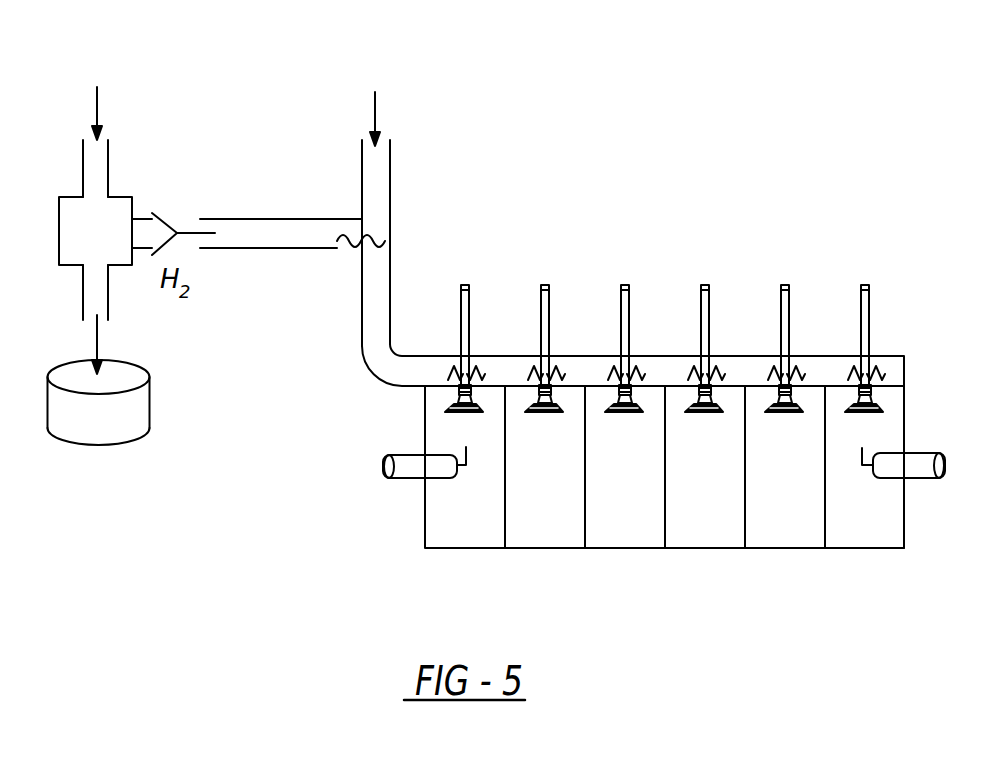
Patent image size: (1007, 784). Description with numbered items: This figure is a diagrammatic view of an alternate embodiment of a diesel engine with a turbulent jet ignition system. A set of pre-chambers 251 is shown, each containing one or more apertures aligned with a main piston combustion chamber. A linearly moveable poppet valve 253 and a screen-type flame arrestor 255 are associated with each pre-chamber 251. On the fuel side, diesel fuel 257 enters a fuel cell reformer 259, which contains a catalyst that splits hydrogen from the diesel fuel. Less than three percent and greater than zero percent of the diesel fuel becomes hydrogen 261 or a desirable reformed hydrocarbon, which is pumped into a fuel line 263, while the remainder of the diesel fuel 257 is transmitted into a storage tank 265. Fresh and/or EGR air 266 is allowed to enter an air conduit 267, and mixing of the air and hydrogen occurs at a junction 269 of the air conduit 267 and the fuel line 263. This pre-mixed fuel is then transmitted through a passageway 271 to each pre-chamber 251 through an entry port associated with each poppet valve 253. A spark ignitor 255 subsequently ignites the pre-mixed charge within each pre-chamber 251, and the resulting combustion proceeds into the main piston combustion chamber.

The pre-chamber 251 is at (476, 531).
The poppet valve 253 is at (463, 412).
The flame arrestor 255 is at (490, 375).
The diesel fuel 257 is at (100, 108).
The fuel cell reformer 259 is at (58, 230).
The hydrogen 261 is at (143, 213).
The fuel line 263 is at (243, 232).
The storage tank 265 is at (103, 425).
The air 266 is at (375, 100).
The air conduit 267 is at (372, 185).
The junction 269 is at (360, 248).
The passageway 271 is at (375, 330).